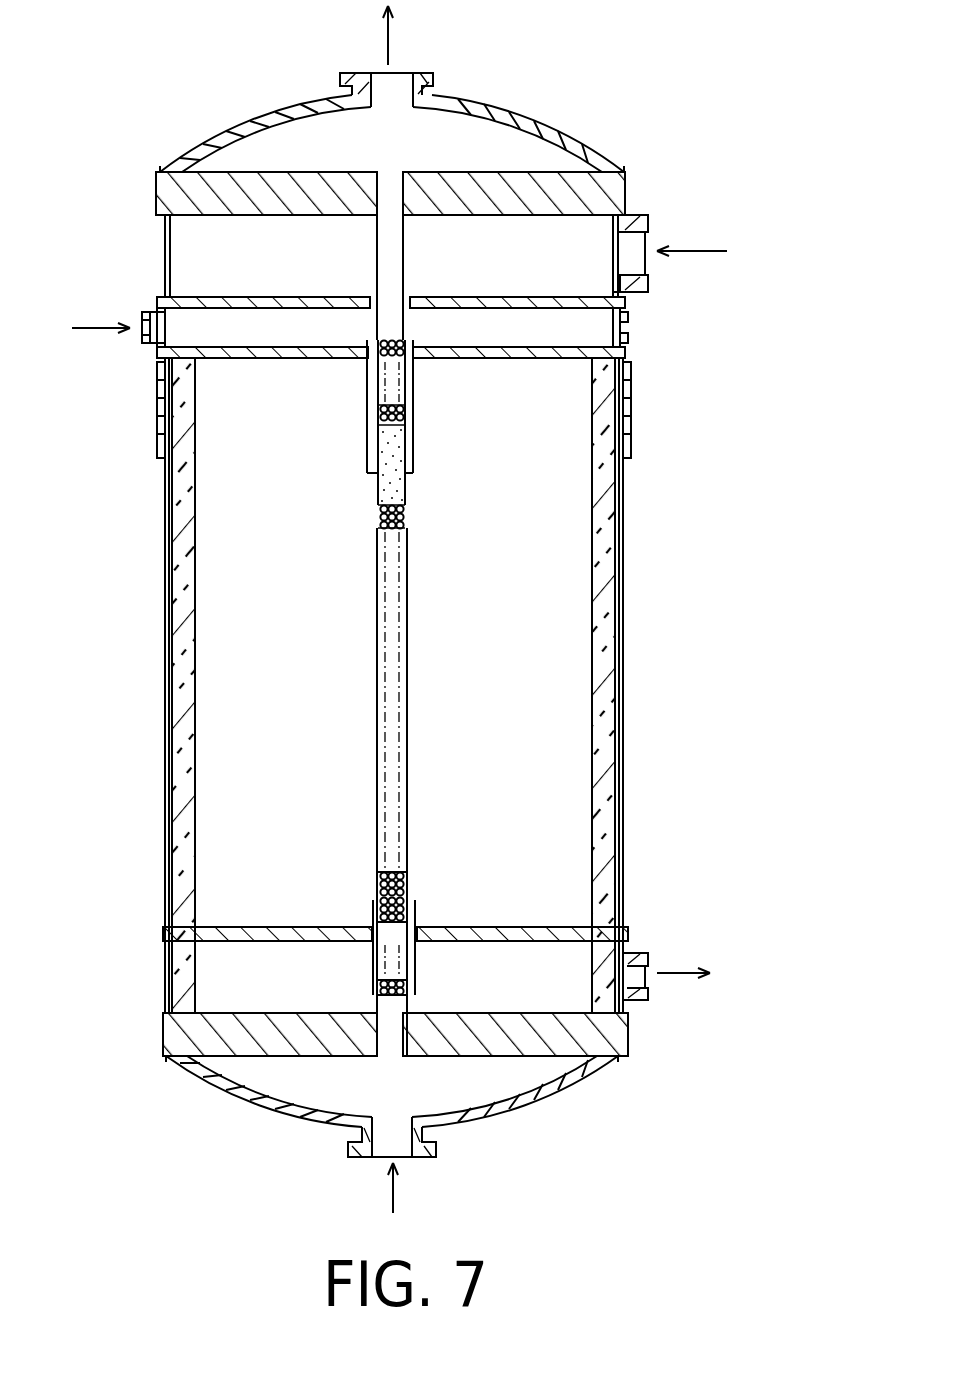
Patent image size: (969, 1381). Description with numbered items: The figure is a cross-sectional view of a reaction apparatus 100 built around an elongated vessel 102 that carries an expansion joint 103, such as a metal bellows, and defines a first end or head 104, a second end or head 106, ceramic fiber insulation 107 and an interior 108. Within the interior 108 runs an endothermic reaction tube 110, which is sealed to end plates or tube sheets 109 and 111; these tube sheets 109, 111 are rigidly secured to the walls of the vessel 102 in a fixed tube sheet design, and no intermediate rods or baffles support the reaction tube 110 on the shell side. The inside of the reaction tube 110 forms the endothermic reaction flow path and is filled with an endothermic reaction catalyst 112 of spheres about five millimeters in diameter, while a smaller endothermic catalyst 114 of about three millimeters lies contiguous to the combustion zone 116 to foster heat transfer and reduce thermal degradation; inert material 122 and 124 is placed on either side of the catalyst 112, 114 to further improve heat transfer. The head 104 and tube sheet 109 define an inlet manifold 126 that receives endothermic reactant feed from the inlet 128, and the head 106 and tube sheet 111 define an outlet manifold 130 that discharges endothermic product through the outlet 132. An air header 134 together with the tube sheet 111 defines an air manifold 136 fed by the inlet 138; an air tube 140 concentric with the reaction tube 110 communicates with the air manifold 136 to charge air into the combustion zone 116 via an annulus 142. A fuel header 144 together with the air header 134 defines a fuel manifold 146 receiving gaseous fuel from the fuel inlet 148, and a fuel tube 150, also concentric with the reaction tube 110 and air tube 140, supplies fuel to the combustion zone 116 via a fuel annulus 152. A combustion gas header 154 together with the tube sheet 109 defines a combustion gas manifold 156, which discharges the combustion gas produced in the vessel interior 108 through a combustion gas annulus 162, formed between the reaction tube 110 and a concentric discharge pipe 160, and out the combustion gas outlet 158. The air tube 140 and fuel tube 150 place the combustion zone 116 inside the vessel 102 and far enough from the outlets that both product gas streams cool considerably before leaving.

The reaction apparatus 100 is at (697, 530).
The elongated vessel 102 is at (623, 506).
The expansion joint 103 is at (632, 426).
The first end or head 104 is at (572, 1097).
The second end or head 106 is at (548, 126).
The ceramic fiber insulation 107 is at (612, 621).
The interior 108 is at (532, 592).
The end plate or tube sheet 109 is at (616, 1040).
The endothermic reaction tube 110 is at (408, 701).
The end plate or tube sheet 111 is at (562, 166).
The endothermic reaction catalyst 112 is at (378, 515).
The endothermic catalyst 114 is at (408, 491).
The combustion zone 116 is at (416, 451).
The inert material 122 is at (400, 969).
The inert material 124 is at (394, 378).
The inlet manifold 126 is at (462, 1092).
The inlet 128 is at (430, 1152).
The outlet manifold 130 is at (470, 147).
The outlet 132 is at (426, 77).
The air header 134 is at (624, 318).
The air manifold 136 is at (560, 257).
The inlet 138 is at (650, 224).
The air tube 140 is at (405, 342).
The annulus 142 is at (377, 371).
The fuel header 144 is at (290, 359).
The fuel manifold 146 is at (281, 318).
The fuel inlet 148 is at (140, 336).
The fuel tube 150 is at (378, 421).
The fuel annulus 152 is at (414, 406).
The combustion gas header 154 is at (500, 926).
The combustion gas manifold 156 is at (562, 978).
The combustion gas outlet 158 is at (652, 1006).
The discharge pipe 160 is at (412, 916).
The combustion gas annulus 162 is at (378, 896).